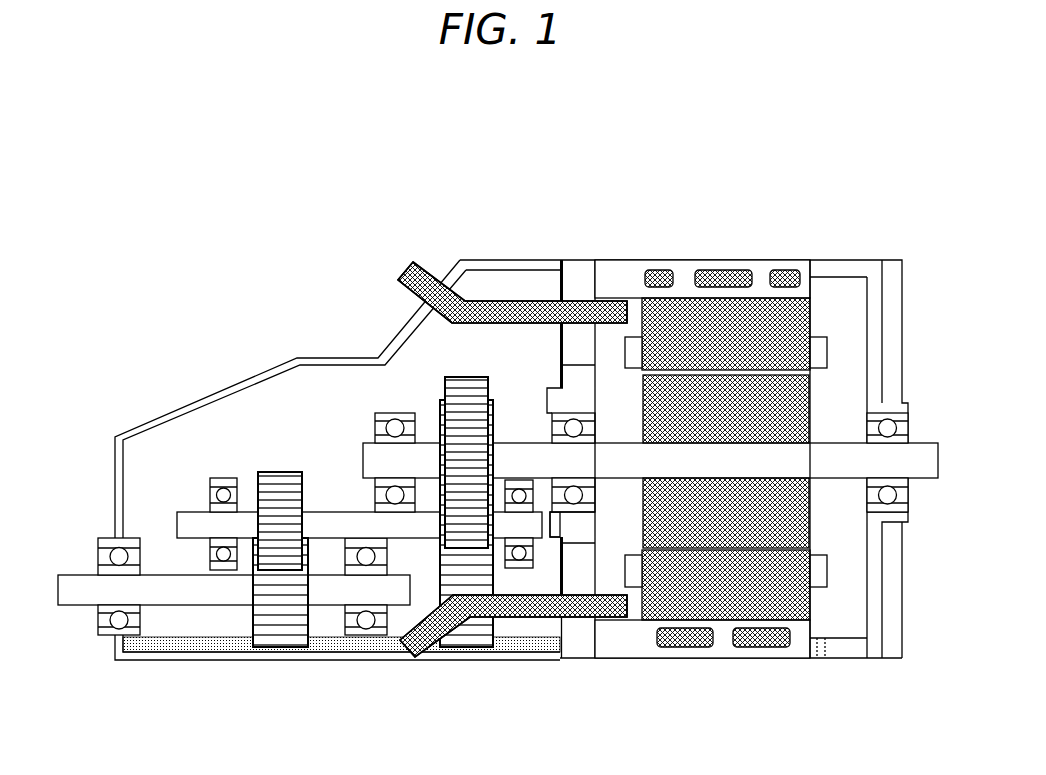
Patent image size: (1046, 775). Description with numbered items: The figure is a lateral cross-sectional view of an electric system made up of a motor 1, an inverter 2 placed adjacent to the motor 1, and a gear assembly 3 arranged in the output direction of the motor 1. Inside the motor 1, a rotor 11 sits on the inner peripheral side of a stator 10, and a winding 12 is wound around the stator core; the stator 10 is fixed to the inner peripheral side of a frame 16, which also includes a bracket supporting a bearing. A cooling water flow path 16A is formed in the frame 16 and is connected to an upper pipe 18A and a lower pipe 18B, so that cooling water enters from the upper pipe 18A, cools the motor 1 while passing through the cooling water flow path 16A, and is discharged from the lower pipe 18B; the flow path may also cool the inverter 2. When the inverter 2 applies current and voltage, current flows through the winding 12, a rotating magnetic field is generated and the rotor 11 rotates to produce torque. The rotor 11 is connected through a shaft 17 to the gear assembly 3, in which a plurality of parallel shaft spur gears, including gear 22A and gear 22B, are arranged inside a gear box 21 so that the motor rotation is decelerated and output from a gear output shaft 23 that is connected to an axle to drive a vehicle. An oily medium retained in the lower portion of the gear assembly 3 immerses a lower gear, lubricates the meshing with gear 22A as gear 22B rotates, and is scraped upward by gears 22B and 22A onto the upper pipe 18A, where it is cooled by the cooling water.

The motor 1 is at (787, 298).
The inverter 2 is at (892, 262).
The gear assembly 3 is at (192, 403).
The stator 10 is at (682, 317).
The rotor 11 is at (772, 393).
The winding 12 is at (636, 338).
The frame 16 is at (605, 262).
The cooling water flow path 16A is at (725, 272).
The shaft 17 is at (848, 478).
The upper pipe 18A is at (408, 268).
The lower pipe 18B is at (420, 657).
The gear box 21 is at (458, 260).
The gear 22A is at (460, 378).
The gear 22B is at (278, 638).
The gear output shaft 23 is at (72, 593).